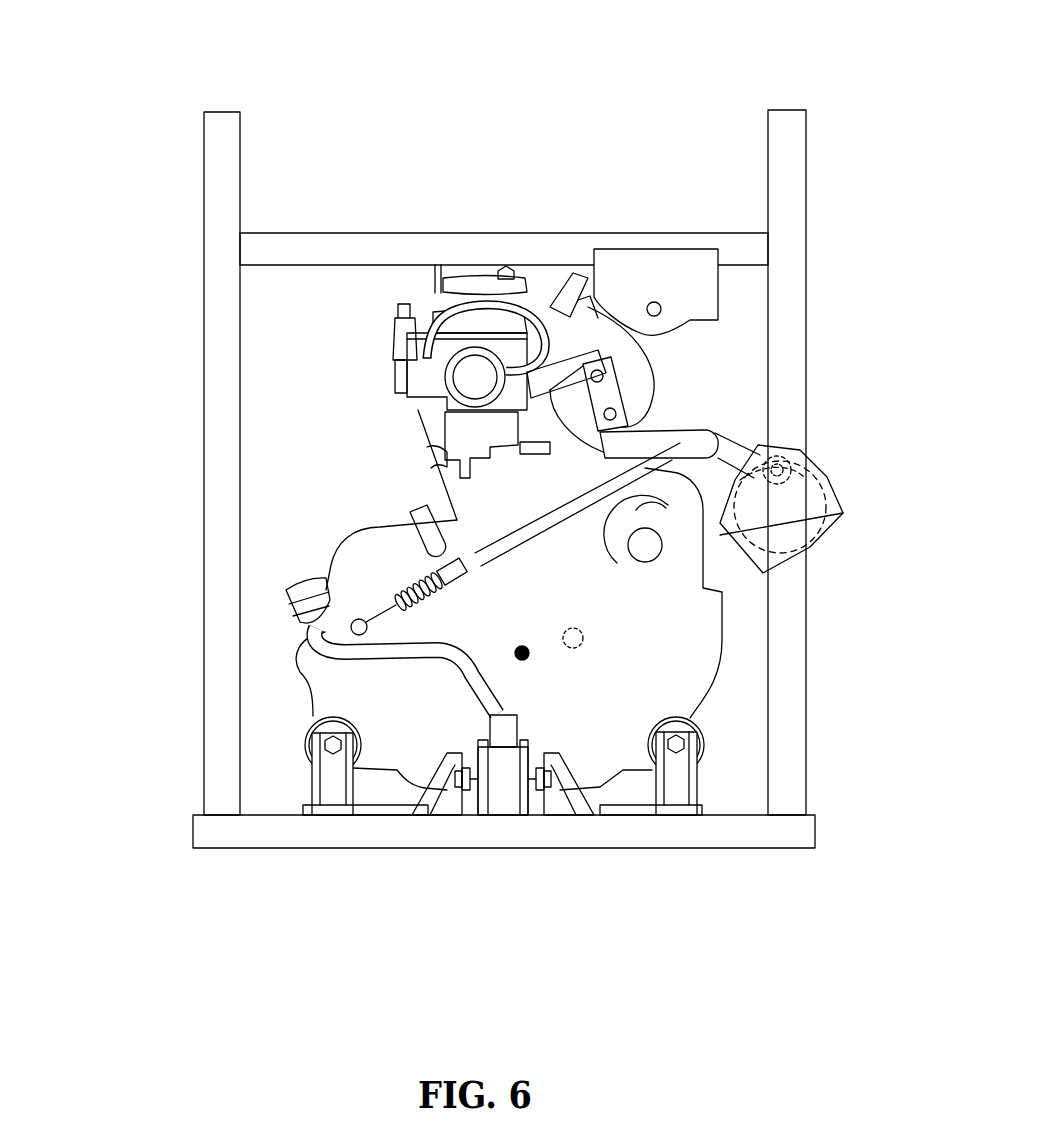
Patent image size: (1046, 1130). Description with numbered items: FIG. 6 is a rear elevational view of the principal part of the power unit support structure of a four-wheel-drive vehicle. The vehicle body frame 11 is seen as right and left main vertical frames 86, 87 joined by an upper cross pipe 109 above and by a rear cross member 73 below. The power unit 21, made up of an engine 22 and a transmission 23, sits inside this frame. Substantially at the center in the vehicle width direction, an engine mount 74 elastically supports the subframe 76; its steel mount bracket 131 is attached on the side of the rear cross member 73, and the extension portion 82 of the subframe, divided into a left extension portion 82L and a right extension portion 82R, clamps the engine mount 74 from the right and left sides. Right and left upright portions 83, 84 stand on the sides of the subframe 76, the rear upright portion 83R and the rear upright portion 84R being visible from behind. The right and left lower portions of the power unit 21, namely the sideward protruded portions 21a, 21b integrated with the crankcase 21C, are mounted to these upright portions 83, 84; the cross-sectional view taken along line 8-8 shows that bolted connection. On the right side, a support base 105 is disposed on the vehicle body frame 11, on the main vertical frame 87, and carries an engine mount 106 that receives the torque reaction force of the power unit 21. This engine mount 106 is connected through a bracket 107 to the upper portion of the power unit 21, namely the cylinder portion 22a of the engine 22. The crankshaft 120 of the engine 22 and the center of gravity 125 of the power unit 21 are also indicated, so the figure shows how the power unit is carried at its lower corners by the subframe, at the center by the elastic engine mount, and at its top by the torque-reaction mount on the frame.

The vehicle body frame 11 is at (498, 471).
The power unit 21 is at (395, 337).
The sideward protruded portion 21a is at (308, 733).
The sideward protruded portion 21b is at (698, 733).
The crankcase 21C is at (298, 673).
The engine 22 is at (410, 425).
The cylinder portion 22a is at (606, 344).
The transmission 23 is at (333, 542).
The rear cross member 73 is at (256, 848).
The engine mount 74 is at (504, 784).
The subframe 76 is at (630, 808).
The extension portion 82 is at (517, 860).
The left extension portion 82L is at (452, 808).
The right extension portion 82R is at (565, 818).
The upright portion 83 is at (245, 811).
The rear upright portion 83R is at (307, 783).
The upright portion 84 is at (748, 828).
The rear upright portion 84R is at (681, 796).
The main vertical frame 86 is at (216, 371).
The main vertical frame 87 is at (790, 322).
The support base 105 is at (820, 540).
The engine mount 106 is at (840, 480).
The bracket 107 is at (699, 442).
The upper cross pipe 109 is at (484, 243).
The crankshaft 120 is at (585, 637).
The center of gravity 125 is at (522, 645).
The mount bracket 131 is at (455, 810).
The section line 8- 8 is at (332, 688).